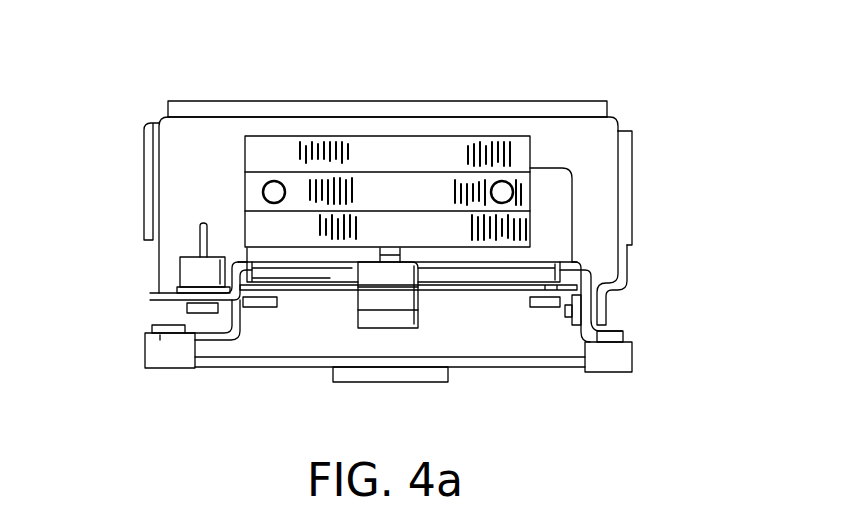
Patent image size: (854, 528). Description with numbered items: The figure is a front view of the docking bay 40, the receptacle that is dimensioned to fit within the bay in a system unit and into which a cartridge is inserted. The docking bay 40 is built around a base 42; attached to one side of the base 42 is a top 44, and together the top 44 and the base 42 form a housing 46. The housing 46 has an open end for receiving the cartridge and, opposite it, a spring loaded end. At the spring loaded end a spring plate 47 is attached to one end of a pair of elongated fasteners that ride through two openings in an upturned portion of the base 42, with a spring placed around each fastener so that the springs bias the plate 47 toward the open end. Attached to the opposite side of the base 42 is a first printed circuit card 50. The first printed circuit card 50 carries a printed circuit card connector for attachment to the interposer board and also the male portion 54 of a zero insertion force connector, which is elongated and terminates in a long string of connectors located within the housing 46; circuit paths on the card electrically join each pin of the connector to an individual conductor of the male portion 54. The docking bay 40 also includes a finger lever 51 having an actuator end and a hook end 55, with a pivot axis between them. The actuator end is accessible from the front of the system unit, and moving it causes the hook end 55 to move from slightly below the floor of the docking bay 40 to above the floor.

The docking bay 40 is at (627, 183).
The base 42 is at (628, 266).
The top 44 is at (415, 110).
The housing 46 is at (582, 110).
The spring plate 47 is at (363, 148).
The first printed circuit card 50 is at (507, 297).
The finger lever 51 is at (370, 317).
The male portion of a zero insertion force connector 54 is at (192, 267).
The hook end 55 is at (427, 263).